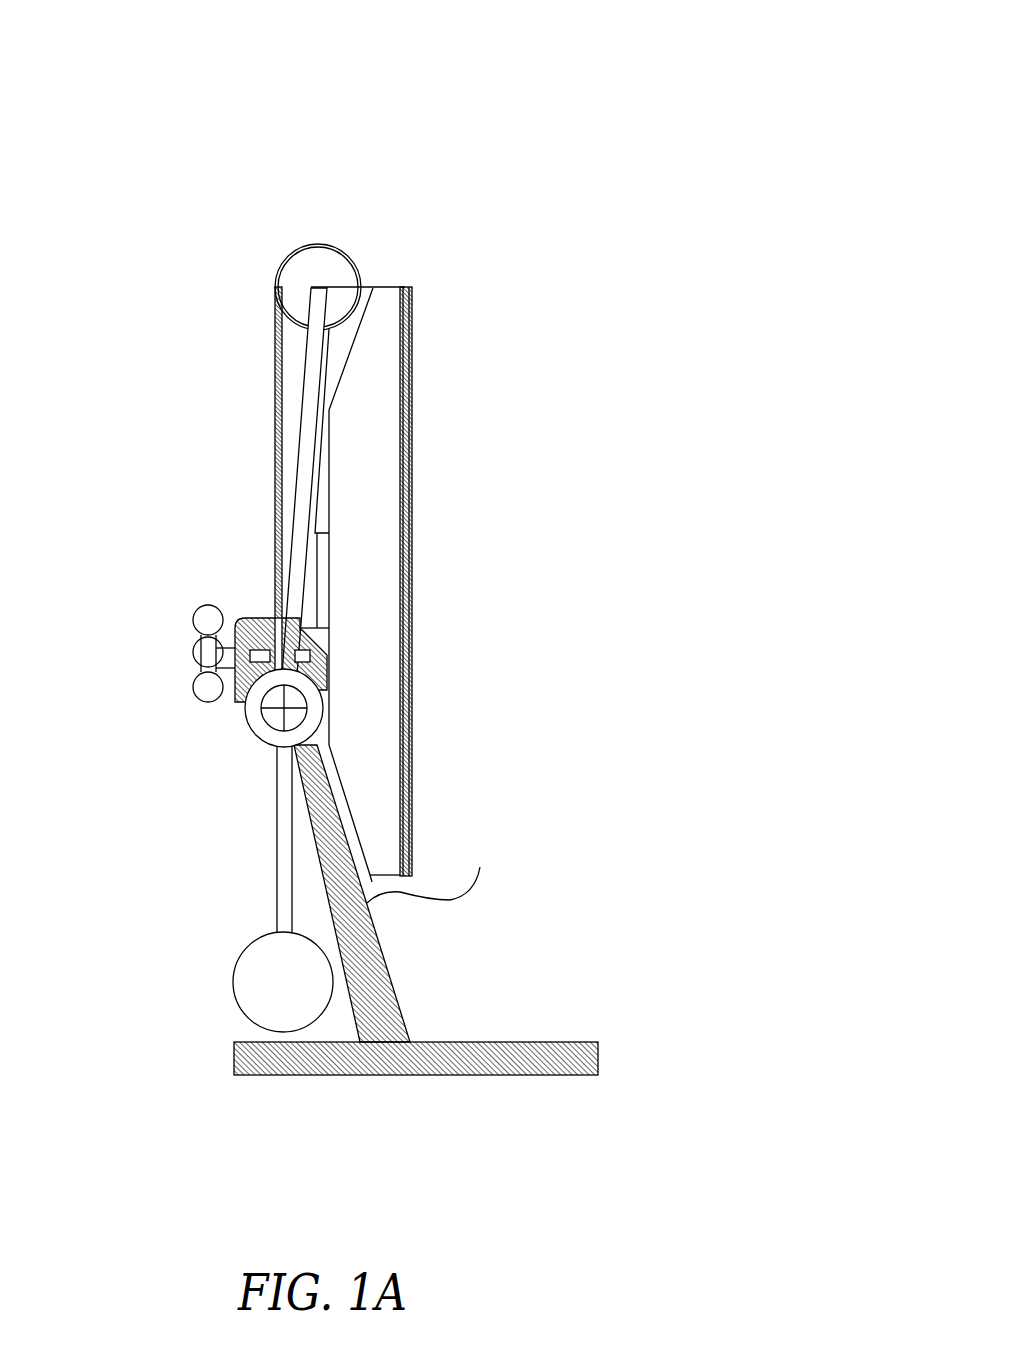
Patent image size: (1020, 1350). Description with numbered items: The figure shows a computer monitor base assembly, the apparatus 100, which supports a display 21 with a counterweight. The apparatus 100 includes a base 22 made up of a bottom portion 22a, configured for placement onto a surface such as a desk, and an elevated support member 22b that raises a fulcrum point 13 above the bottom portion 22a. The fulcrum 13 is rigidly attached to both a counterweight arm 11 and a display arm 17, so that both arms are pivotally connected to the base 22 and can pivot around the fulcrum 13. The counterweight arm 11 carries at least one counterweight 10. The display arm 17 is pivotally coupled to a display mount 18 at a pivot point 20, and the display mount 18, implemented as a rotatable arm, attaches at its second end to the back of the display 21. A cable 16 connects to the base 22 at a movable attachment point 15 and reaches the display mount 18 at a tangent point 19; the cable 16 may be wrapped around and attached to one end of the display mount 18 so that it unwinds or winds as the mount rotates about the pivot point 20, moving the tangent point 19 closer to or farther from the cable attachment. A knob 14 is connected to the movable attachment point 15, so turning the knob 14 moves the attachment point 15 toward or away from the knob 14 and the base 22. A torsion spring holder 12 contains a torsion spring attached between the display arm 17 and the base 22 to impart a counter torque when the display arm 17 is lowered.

The apparatus 100 is at (487, 83).
The counterweight 10 is at (235, 987).
The counterweight arm 11 is at (276, 835).
The torsion spring holder 12 is at (258, 742).
The fulcrum point 13 is at (261, 710).
The knob 14 is at (193, 648).
The movable attachment point 15 is at (216, 632).
The cable 16 is at (275, 483).
The display arm 17 is at (329, 422).
The display mount 18 is at (298, 360).
The tangent point 19 is at (275, 288).
The pivot point 20 is at (375, 286).
The display 21 is at (412, 687).
The base 22 is at (393, 988).
The bottom portion 22a is at (598, 1043).
The elevated support member 22b is at (434, 865).